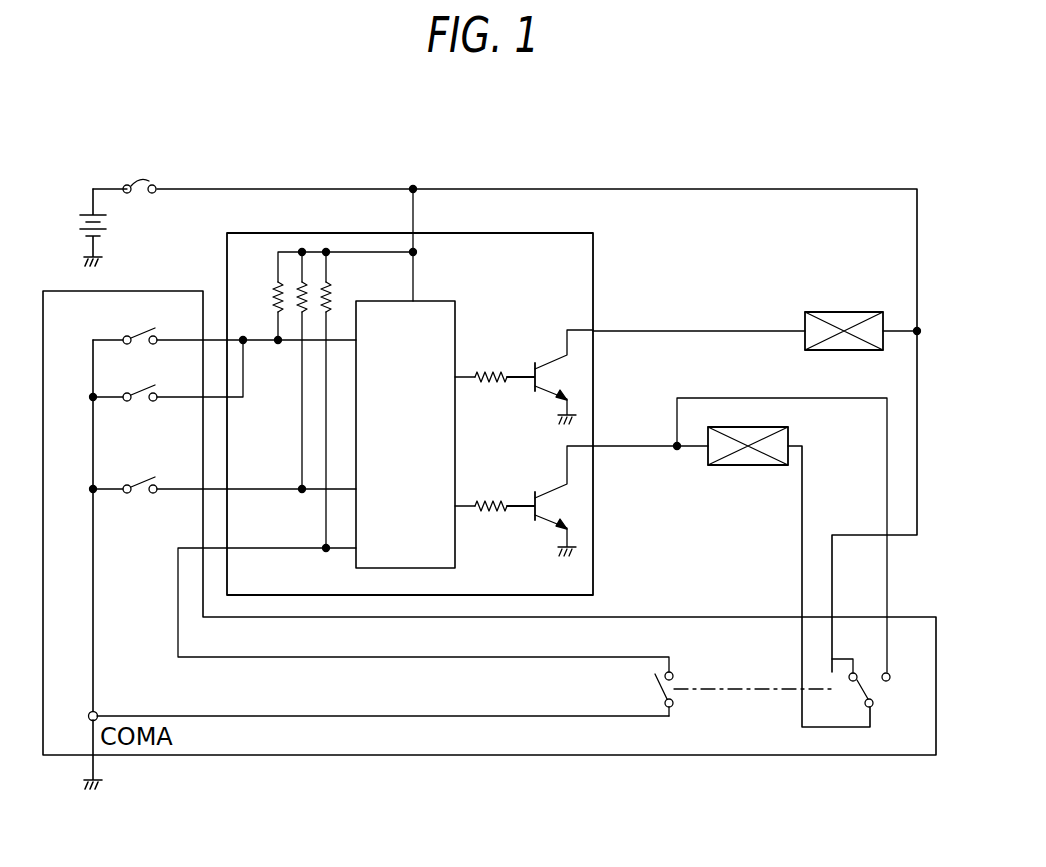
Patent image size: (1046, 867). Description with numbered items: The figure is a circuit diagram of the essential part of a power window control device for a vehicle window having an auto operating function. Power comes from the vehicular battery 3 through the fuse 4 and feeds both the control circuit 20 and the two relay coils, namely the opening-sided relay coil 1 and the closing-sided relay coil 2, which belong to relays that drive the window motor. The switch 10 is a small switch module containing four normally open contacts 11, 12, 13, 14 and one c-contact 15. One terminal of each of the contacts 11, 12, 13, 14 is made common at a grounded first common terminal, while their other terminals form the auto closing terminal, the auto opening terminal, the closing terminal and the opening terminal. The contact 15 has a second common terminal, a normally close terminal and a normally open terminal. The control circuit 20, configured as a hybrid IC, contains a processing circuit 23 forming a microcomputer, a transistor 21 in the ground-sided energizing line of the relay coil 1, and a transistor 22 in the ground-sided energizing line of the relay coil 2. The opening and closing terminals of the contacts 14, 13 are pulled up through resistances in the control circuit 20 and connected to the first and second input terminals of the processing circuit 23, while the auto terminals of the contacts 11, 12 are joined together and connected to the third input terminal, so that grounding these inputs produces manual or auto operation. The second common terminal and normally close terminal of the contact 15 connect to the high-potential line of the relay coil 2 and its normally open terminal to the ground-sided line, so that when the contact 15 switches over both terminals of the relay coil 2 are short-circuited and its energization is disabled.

The opening-sided relay coil 1 is at (843, 312).
The closing-sided relay coil 2 is at (748, 465).
The vehicular battery 3 is at (85, 213).
The fuse 4 is at (131, 182).
The switch 10 is at (470, 756).
The contact 11 is at (135, 333).
The contact 12 is at (138, 404).
The contact 13 is at (138, 497).
The contact 14 is at (658, 690).
The contact 15 is at (882, 690).
The control circuit 20 is at (450, 414).
The transistor 21 is at (590, 380).
The transistor 22 is at (590, 508).
The processing circuit 23 is at (436, 300).